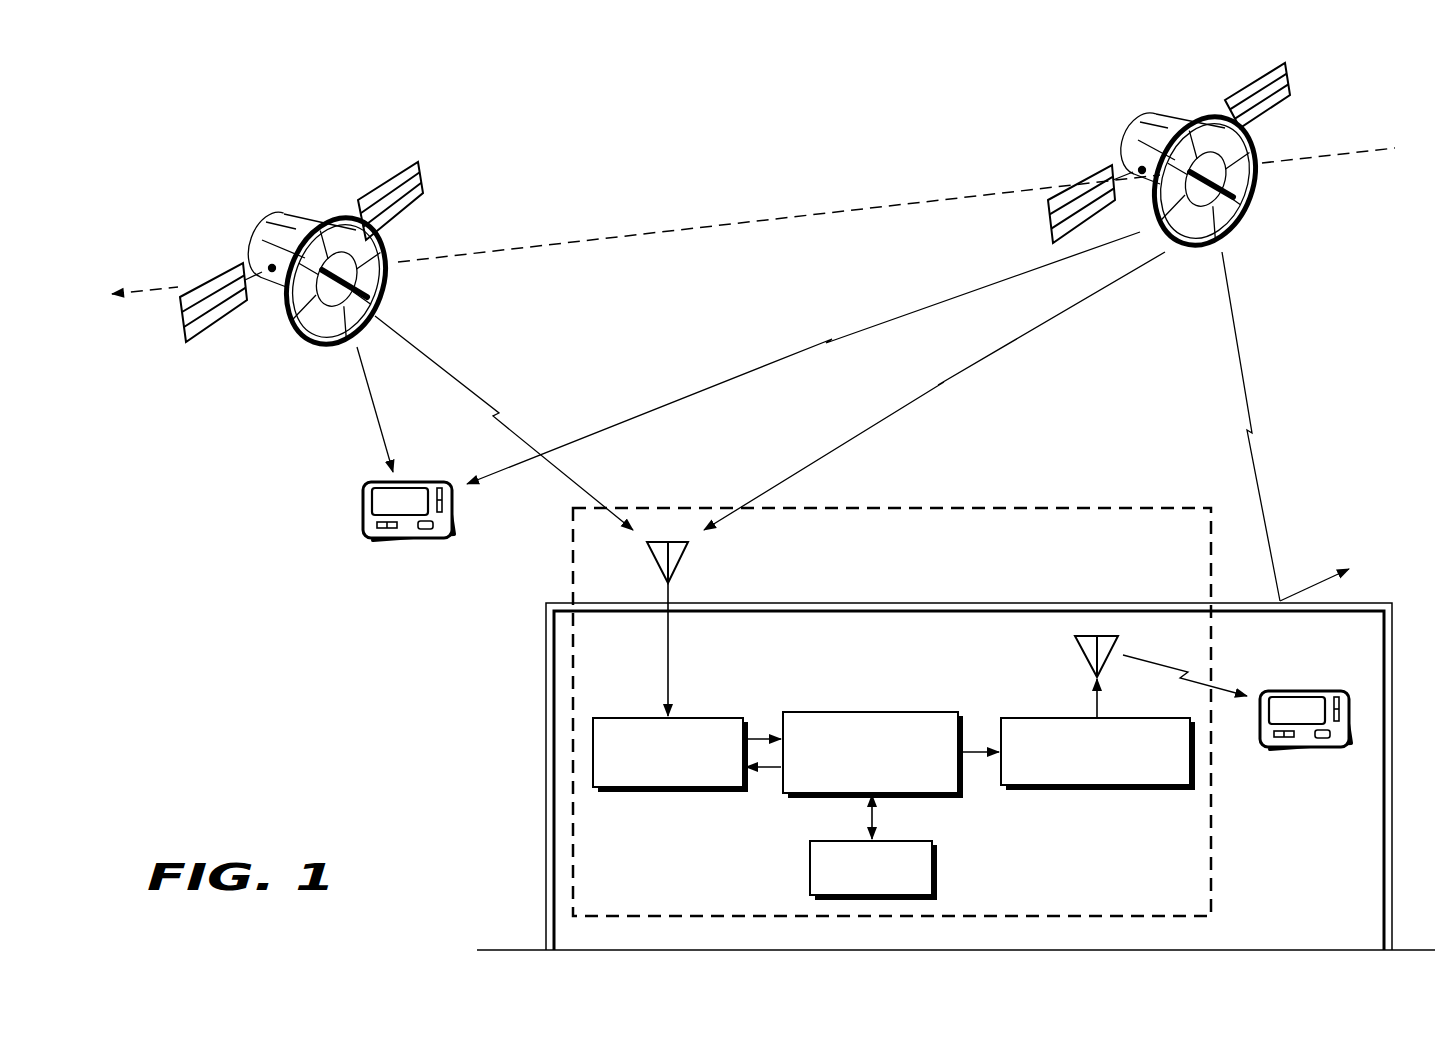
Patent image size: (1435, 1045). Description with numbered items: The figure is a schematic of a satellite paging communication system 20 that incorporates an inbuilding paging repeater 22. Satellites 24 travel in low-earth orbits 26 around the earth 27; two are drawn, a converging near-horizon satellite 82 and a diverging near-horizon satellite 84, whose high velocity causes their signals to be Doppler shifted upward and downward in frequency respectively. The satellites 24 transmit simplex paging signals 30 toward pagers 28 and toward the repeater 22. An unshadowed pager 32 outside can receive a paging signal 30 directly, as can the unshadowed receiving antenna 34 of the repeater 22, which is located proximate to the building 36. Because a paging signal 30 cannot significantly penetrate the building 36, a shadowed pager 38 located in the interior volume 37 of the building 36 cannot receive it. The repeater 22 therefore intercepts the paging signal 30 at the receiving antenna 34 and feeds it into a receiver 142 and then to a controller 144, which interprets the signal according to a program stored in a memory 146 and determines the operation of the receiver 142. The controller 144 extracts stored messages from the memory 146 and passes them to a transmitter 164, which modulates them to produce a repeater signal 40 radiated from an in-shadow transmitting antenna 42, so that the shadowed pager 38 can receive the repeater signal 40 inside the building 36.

The satellite paging communication system 20 is at (274, 803).
The inbuilding paging repeater 22 is at (1067, 506).
The satellites 24 is at (210, 330).
The low-earth orbits 26 is at (737, 224).
The earth 27 is at (510, 949).
The pagers 28 is at (853, 634).
The paging signals 30 is at (449, 374).
The unshadowed pager 32 is at (420, 541).
The receiving antenna 34 is at (680, 565).
The building 36 is at (546, 712).
The interior volume 37 is at (1314, 892).
The shadowed pager 38 is at (1314, 750).
The repeater signal 40 is at (1158, 667).
The in-shadow transmitting antenna 42 is at (1082, 656).
The converging near-horizon satellite 82 is at (1155, 118).
The diverging near-horizon satellite 84 is at (287, 214).
The receiver 142 is at (652, 792).
The controller 144 is at (864, 712).
The memory 146 is at (937, 866).
The transmitter 164 is at (1120, 789).